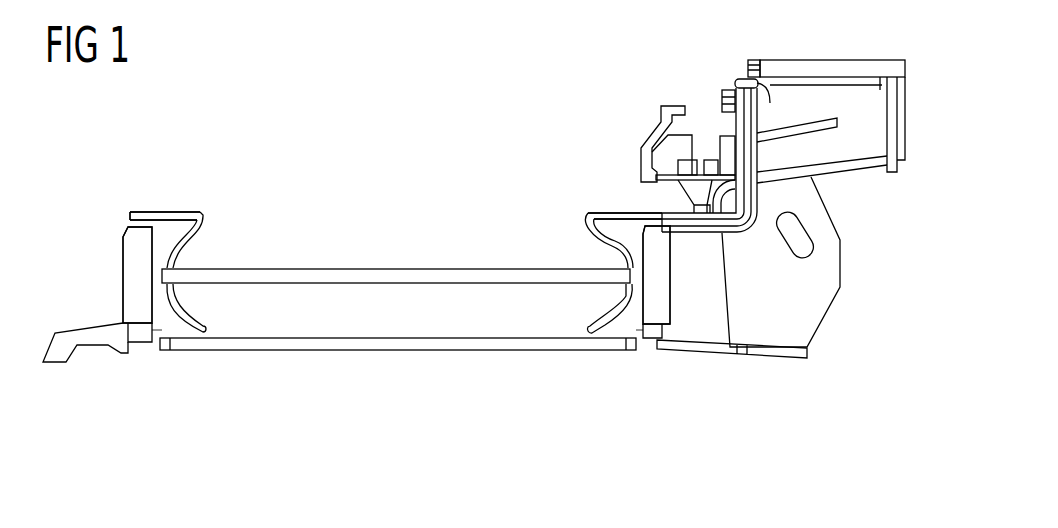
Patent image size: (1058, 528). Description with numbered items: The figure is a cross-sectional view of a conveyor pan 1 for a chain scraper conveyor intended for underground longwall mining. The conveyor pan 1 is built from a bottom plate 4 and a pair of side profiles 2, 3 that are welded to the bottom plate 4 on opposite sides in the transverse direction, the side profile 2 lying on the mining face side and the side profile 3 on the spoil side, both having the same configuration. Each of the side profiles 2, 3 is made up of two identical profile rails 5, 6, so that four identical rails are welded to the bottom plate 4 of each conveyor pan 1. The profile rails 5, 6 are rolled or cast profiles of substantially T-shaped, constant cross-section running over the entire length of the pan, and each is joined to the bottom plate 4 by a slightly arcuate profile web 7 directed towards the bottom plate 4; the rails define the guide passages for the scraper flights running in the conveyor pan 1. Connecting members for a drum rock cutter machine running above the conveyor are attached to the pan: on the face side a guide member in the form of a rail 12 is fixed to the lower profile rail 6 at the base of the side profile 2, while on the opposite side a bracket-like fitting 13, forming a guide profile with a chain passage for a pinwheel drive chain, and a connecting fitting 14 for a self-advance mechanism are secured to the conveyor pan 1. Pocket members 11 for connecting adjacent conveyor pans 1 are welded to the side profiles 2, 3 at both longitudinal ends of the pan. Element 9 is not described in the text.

The conveyor pan 1 is at (440, 130).
The side profile 2 is at (190, 205).
The side profile 3 is at (600, 204).
The bottom plate 4 is at (397, 269).
The profile rail 5 is at (158, 222).
The profile rail 6 is at (157, 333).
The profile web 7 is at (165, 259).
The lower tube 9 is at (397, 350).
The pocket member 11 is at (132, 278).
The rail 12 is at (57, 365).
The bracket-like fitting 13 is at (753, 150).
The connecting fitting 14 is at (812, 308).